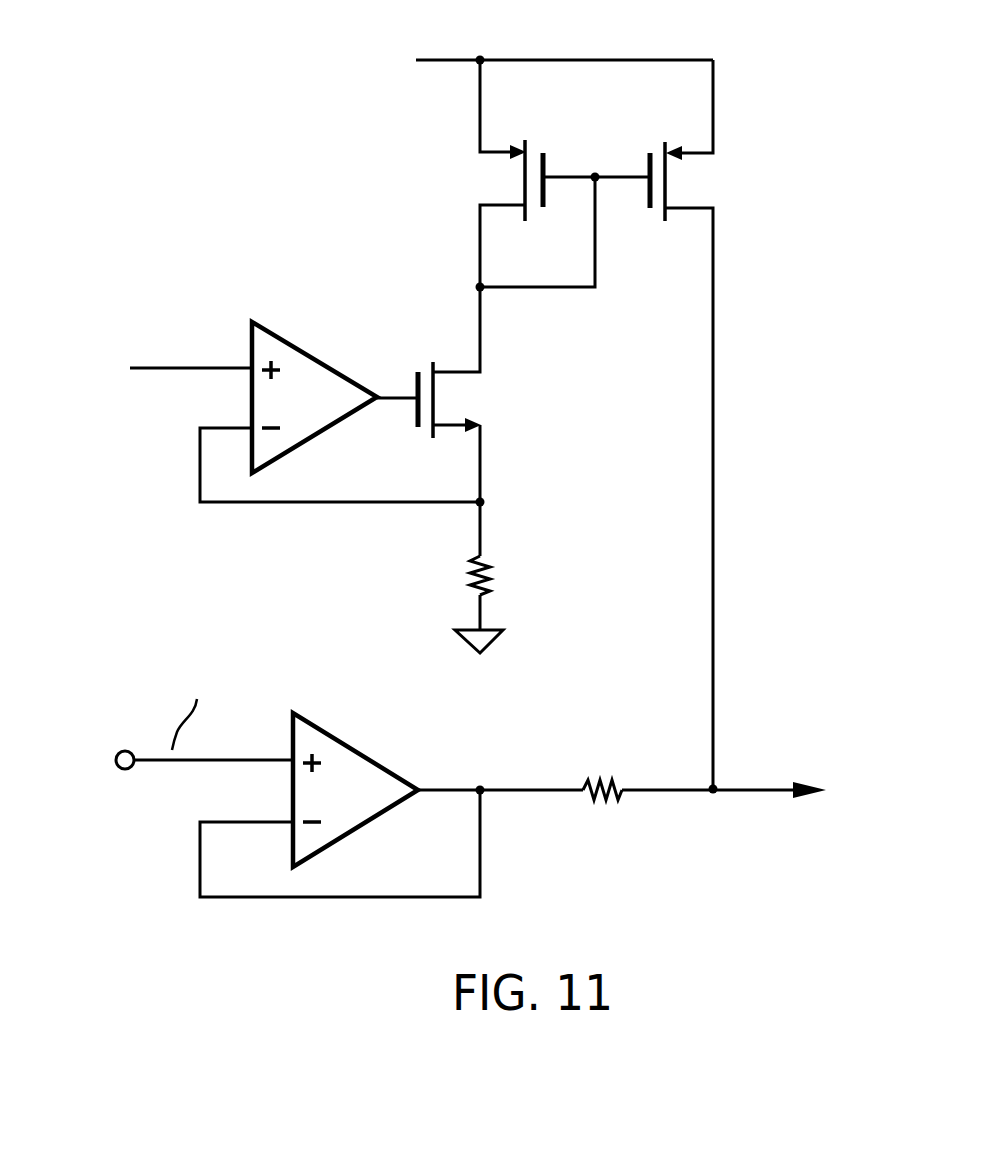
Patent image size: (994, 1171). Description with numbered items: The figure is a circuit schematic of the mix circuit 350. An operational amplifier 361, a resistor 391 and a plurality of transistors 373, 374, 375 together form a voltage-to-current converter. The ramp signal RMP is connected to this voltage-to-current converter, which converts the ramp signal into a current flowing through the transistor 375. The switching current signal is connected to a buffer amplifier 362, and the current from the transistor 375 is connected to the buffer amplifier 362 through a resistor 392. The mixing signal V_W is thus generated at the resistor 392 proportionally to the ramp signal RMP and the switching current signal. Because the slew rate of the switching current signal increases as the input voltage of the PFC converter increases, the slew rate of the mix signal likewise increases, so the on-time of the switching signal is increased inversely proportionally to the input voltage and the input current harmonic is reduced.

The mix circuit 350 is at (888, 40).
The operational amplifier 361 is at (307, 349).
The buffer amplifier 362 is at (360, 750).
The transistor 373 is at (482, 398).
The transistor 374 is at (480, 181).
The transistor 375 is at (706, 187).
The resistor 391 is at (497, 583).
The resistor 392 is at (602, 769).